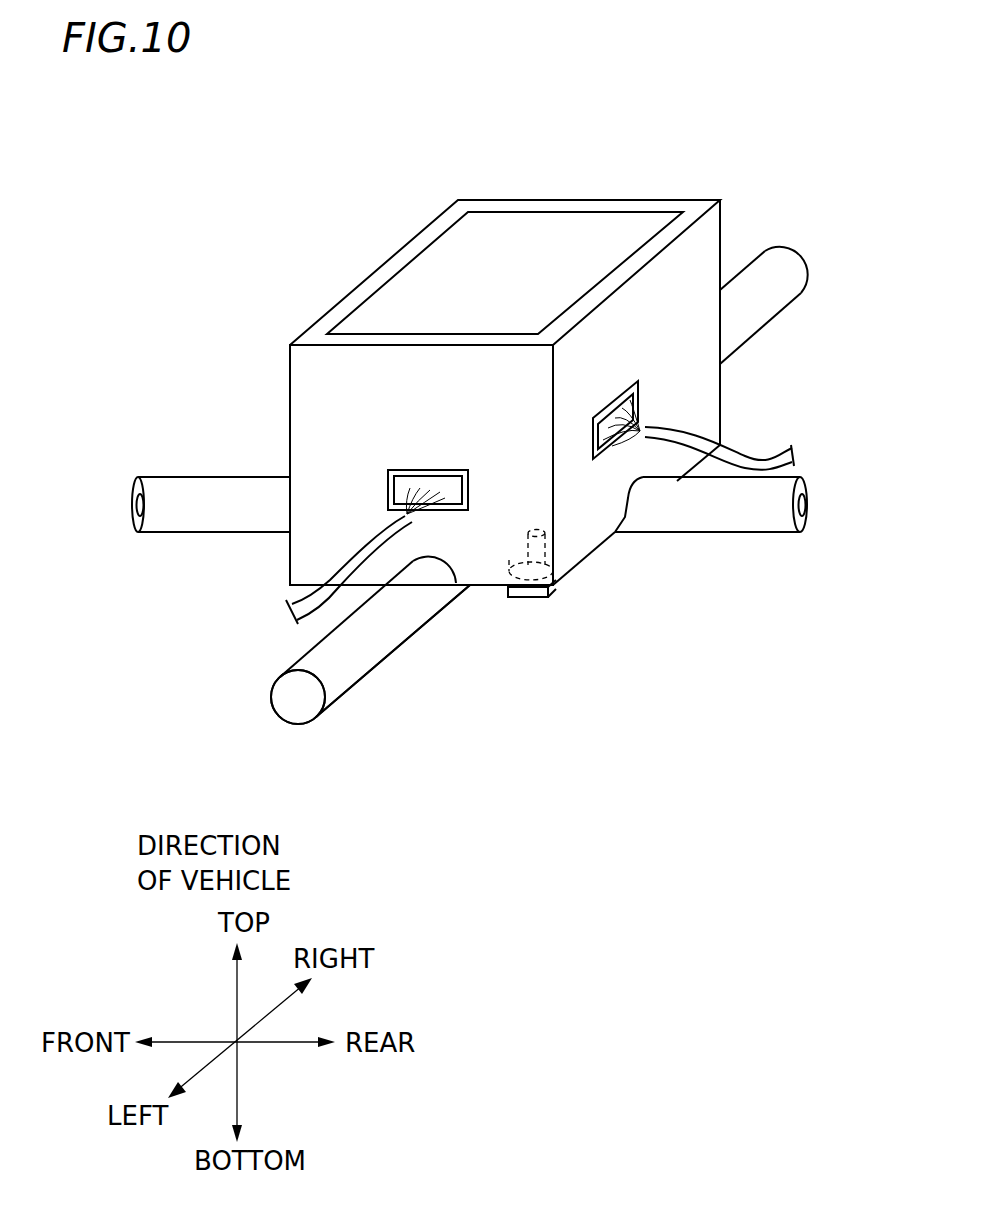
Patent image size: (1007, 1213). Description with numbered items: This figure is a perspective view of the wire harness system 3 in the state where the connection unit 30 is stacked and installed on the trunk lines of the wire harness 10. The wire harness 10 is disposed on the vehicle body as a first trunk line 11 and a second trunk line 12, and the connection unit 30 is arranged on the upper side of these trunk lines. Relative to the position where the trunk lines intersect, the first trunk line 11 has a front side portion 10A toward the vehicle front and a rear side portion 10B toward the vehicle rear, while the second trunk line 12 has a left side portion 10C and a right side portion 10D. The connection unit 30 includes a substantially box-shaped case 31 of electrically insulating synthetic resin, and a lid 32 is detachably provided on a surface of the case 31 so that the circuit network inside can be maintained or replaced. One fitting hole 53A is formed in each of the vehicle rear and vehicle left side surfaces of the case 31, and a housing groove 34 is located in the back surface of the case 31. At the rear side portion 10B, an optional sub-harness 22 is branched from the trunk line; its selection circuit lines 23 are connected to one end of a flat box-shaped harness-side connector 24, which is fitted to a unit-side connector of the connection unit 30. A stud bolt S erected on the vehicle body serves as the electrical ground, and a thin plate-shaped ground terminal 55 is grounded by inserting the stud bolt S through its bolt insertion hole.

The wire harness system 3 is at (359, 198).
The wire harness 10 is at (388, 663).
The front side portion 10A is at (208, 459).
The rear side portion 10B is at (777, 525).
The left side portion 10C is at (390, 671).
The right side portion 10D is at (765, 262).
The first trunk line 11 is at (180, 485).
The second trunk line 12 is at (342, 685).
The optional sub-harness 22 is at (750, 447).
The selection circuit lines 23 is at (630, 412).
The harness-side connector 24 is at (650, 404).
The connection unit 30 is at (505, 337).
The case 31 is at (593, 205).
The lid 32 is at (455, 240).
The housing groove 34 is at (433, 582).
The fitting hole 53A is at (528, 382).
The ground terminal 55 is at (568, 578).
The stud bolt S is at (585, 609).